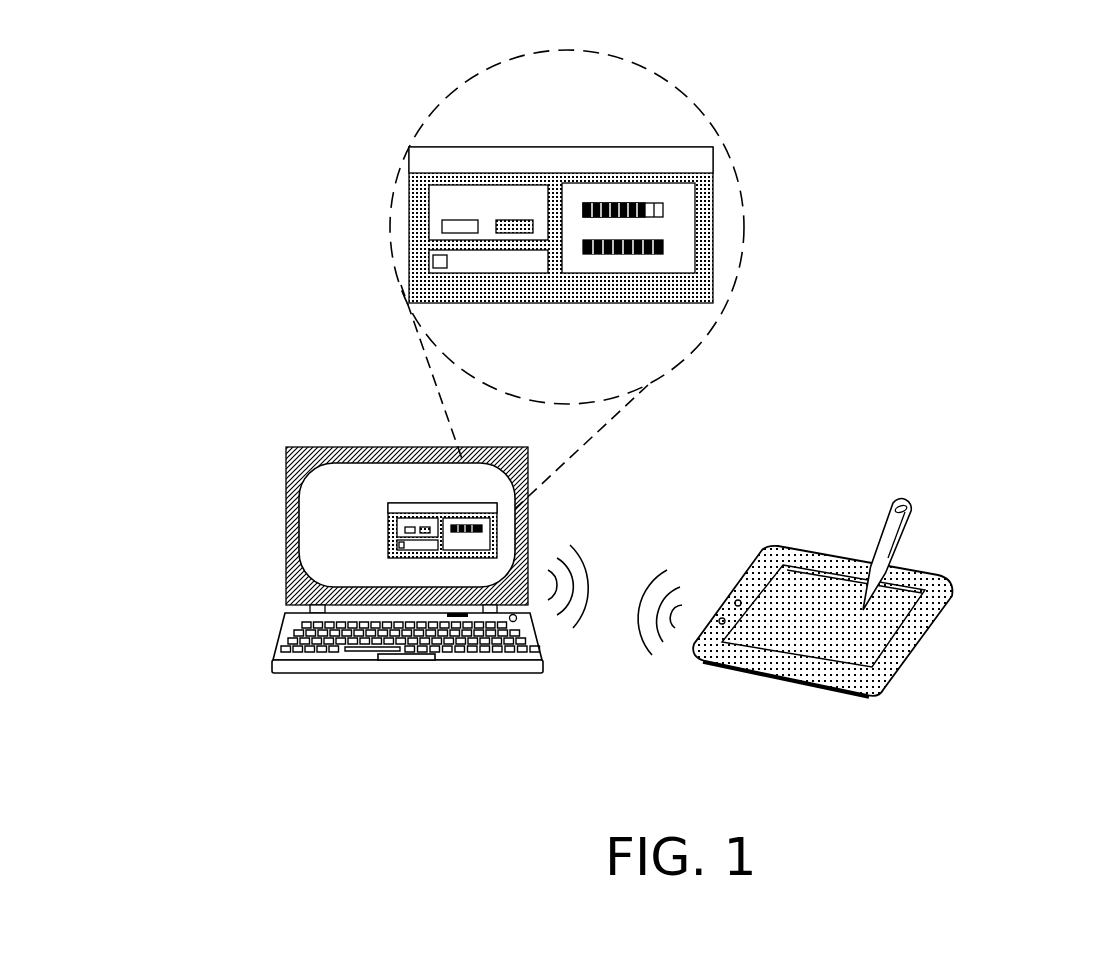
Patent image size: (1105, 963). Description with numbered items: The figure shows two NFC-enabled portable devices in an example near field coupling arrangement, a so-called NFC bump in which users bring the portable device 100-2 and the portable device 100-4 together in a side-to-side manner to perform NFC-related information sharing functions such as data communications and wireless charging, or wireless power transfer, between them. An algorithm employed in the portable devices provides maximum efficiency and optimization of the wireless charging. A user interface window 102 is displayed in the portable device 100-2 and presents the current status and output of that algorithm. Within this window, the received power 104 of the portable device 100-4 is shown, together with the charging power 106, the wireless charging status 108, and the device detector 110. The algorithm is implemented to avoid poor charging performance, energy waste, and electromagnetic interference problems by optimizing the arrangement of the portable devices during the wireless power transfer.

The user interface window 102 is at (644, 68).
The received power 104 is at (657, 207).
The charging power 106 is at (663, 240).
The wireless charging status 108 is at (440, 206).
The device detector 110 is at (436, 258).
The portable device 100-2 is at (287, 507).
The portable device 100-4 is at (947, 575).